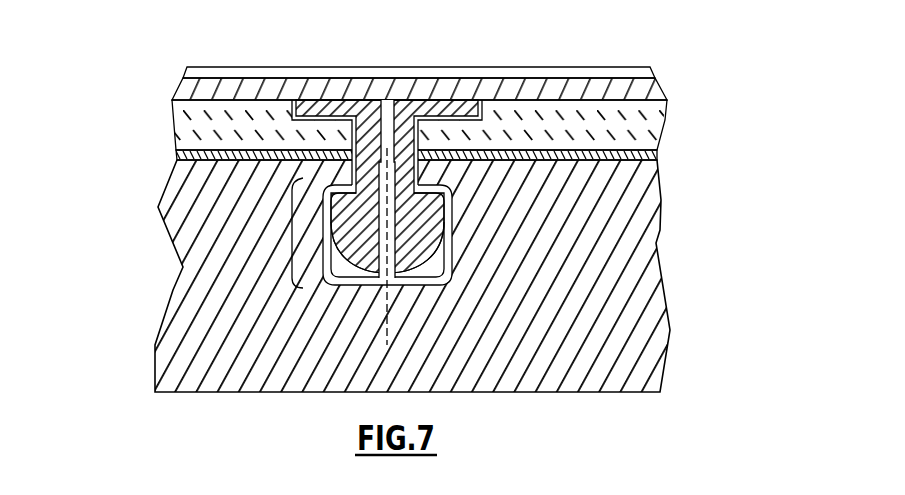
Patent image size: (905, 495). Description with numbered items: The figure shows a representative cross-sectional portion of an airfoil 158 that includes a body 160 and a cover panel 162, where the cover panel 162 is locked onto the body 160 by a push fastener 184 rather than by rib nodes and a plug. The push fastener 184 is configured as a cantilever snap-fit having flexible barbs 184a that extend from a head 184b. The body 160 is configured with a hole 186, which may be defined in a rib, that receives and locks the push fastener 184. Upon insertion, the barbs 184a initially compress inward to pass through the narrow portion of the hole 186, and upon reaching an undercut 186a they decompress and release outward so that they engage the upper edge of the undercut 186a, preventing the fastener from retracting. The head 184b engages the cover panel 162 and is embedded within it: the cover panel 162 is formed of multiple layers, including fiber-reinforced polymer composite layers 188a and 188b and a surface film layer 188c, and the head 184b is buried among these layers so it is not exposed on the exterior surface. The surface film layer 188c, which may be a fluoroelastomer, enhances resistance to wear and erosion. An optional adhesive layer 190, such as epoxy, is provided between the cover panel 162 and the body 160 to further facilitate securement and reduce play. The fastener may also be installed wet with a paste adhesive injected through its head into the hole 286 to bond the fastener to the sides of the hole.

The airfoil 158 is at (400, 239).
The body 160 is at (628, 322).
The cover panel 162 is at (438, 103).
The push fastener 184 is at (284, 186).
The flexible barbs 184a is at (350, 241).
The head 184b is at (325, 102).
The hole 186 is at (318, 233).
The undercut 186a is at (290, 237).
The fiber-reinforced layer 188a is at (617, 118).
The fiber-reinforced layer 188b is at (497, 88).
The surface film layer 188c is at (627, 76).
The adhesive layer 190 is at (197, 157).
The hole 286 is at (389, 123).